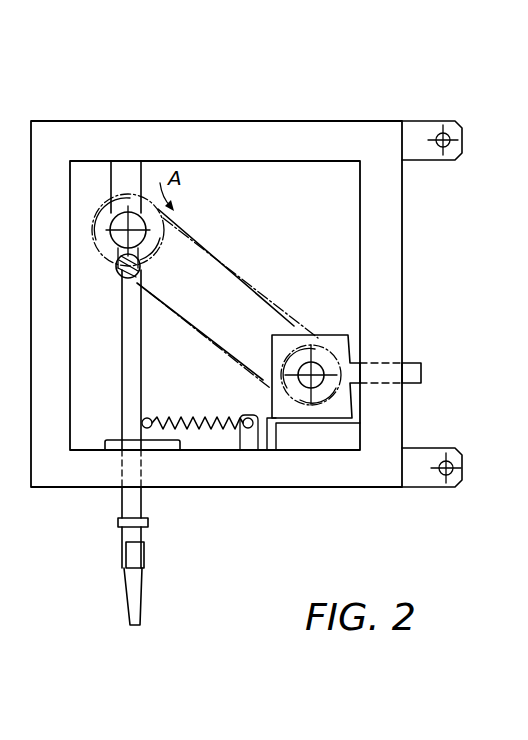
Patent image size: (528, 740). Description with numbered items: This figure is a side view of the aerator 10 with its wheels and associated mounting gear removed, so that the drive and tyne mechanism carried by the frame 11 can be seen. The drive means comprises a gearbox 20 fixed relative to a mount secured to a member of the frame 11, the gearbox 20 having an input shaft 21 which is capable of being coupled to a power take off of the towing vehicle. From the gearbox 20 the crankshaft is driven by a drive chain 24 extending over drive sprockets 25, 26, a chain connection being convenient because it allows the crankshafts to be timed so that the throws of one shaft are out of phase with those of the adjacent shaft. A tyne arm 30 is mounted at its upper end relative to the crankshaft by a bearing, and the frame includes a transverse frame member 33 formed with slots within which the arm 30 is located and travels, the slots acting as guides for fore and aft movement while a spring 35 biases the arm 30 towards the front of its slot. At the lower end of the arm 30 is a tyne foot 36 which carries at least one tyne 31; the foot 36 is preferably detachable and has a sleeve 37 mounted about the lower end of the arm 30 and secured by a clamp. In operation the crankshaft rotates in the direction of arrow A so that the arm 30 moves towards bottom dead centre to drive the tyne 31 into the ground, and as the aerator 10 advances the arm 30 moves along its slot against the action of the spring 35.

The aerator 10 is at (381, 96).
The frame 11 is at (33, 118).
The gearbox 20 is at (341, 335).
The input shaft 21 is at (422, 372).
The drive chain 24 is at (218, 257).
The drive sprocket 25 is at (157, 249).
The drive sprocket 26 is at (297, 353).
The tyne arm 30 is at (131, 383).
The tyne 31 is at (144, 609).
The transverse frame member 33 is at (173, 447).
The spring 35 is at (182, 420).
The tyne foot 36 is at (99, 564).
The sleeve 37 is at (145, 557).